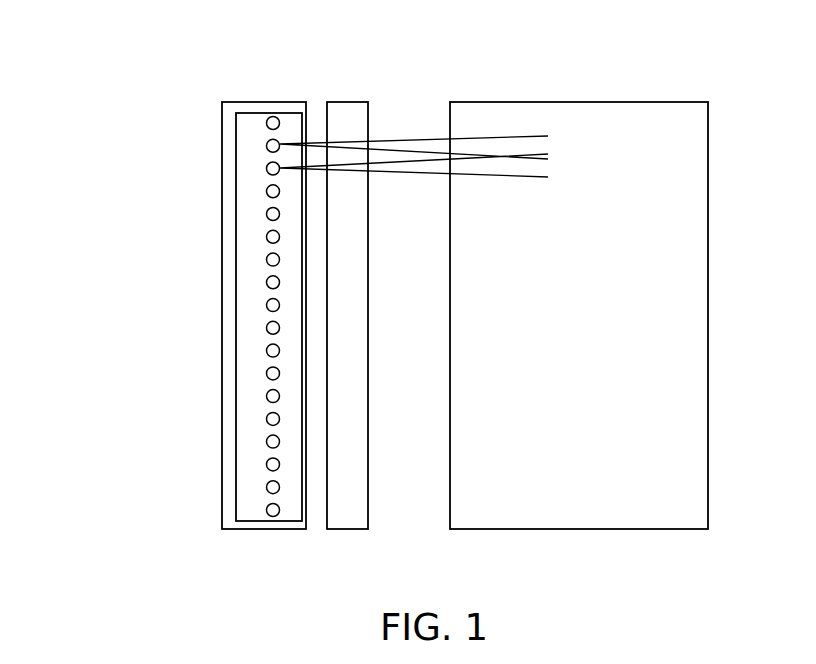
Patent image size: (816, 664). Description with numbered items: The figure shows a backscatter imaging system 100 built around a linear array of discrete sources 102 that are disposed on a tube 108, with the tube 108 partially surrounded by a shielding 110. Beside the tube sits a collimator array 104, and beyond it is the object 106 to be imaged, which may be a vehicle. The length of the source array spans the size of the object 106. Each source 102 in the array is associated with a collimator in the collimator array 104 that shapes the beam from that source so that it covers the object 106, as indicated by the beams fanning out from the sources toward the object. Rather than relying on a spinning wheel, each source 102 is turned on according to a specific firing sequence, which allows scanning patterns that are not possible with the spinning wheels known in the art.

The backscatter imaging system 100 is at (158, 57).
The discrete source 102 is at (266, 123).
The collimator array 104 is at (348, 120).
The object to be imaged 106 is at (648, 130).
The tube 108 is at (235, 163).
The shielding 110 is at (222, 197).